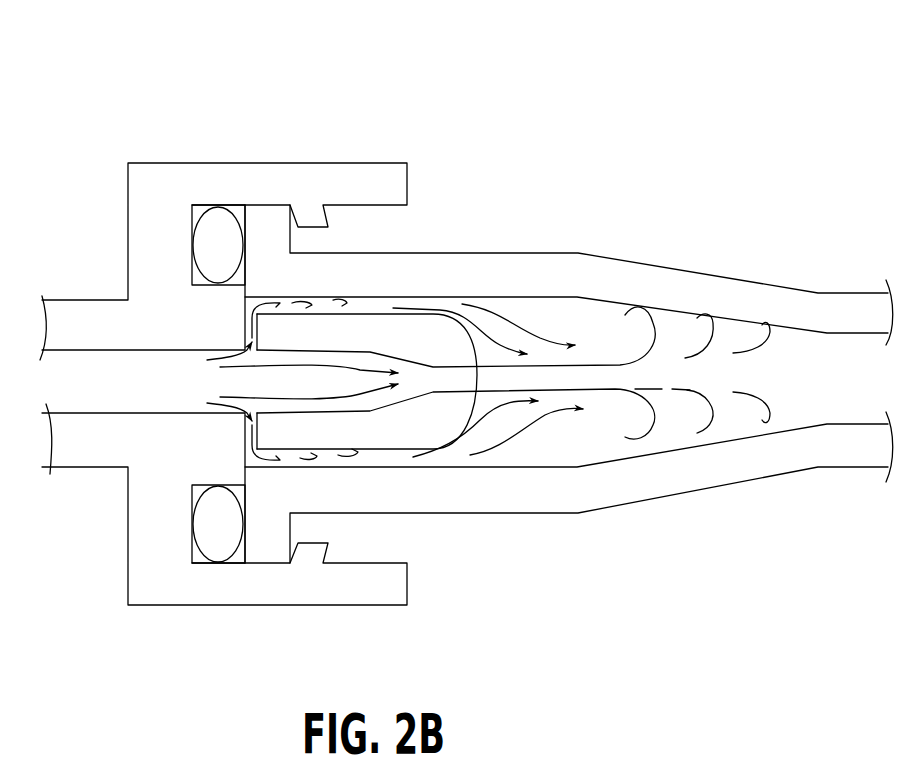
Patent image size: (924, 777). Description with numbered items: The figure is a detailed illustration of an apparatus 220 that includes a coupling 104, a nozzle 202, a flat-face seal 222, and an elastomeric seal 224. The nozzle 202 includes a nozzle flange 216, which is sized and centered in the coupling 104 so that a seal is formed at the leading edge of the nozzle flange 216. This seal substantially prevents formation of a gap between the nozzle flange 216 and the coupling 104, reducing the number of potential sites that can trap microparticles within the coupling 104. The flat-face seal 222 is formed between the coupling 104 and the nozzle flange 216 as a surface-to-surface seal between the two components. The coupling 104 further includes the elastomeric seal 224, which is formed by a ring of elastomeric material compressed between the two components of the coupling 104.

The coupling 104 is at (423, 112).
The nozzle 202 is at (370, 332).
The nozzle flange 216 is at (245, 437).
The apparatus 220 is at (557, 147).
The flat-face seal 222 is at (245, 475).
The elastomeric seal 224 is at (218, 540).